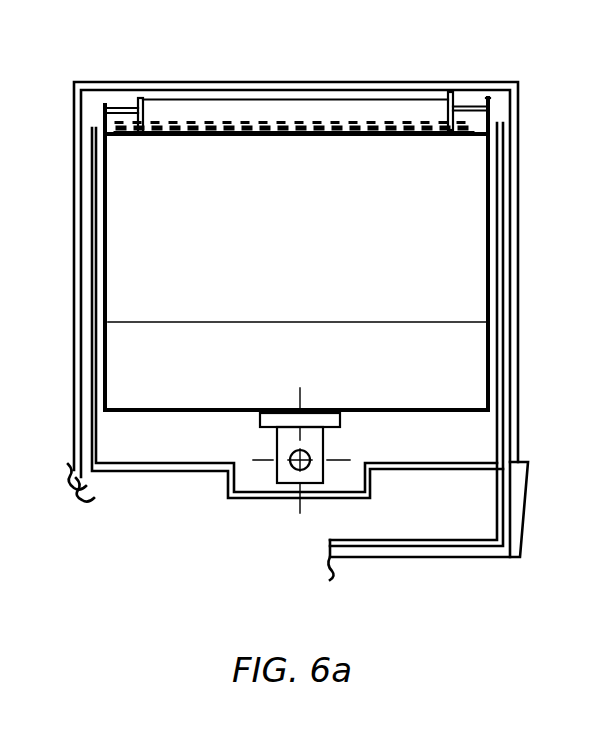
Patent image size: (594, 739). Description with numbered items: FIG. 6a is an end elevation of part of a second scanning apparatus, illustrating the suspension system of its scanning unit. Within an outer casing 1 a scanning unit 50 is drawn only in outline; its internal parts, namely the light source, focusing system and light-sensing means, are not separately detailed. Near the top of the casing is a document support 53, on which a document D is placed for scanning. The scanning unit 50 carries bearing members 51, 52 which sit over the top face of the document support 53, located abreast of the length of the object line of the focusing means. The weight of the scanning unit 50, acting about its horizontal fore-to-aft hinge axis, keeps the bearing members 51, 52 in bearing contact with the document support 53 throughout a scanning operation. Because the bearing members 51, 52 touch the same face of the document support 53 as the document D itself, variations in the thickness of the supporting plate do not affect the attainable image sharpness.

The outer casing 1 is at (512, 403).
The scanning unit 50 is at (463, 235).
The bearing member 51 is at (140, 98).
The bearing member 52 is at (460, 88).
The document support 53 is at (423, 122).
The document D is at (371, 120).